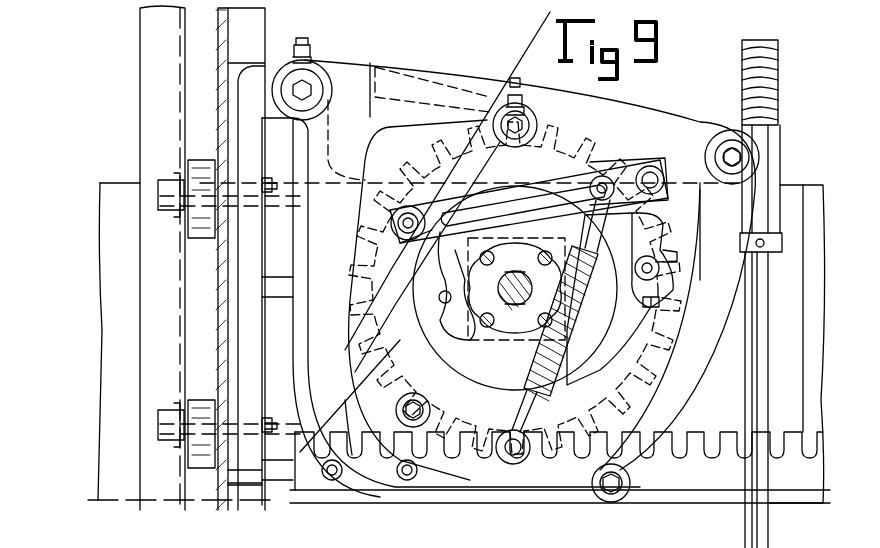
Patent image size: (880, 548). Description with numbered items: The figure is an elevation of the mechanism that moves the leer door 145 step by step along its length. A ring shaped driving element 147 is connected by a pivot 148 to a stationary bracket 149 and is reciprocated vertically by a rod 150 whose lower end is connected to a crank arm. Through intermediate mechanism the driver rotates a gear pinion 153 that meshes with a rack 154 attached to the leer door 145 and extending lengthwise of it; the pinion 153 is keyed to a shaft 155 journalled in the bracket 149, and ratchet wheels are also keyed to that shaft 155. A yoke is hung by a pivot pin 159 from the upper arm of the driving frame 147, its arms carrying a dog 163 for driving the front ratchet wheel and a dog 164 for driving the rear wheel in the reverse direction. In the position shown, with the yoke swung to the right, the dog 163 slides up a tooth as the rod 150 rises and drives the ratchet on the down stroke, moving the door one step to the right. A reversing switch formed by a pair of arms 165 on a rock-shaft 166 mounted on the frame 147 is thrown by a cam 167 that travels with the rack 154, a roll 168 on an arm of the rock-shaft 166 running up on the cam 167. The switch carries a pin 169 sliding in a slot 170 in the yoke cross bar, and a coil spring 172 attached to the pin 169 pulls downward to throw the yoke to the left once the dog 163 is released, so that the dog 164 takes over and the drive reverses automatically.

The leer door 145 is at (108, 492).
The ring shaped driving element 147 is at (455, 76).
The pivot 148 is at (308, 86).
The stationary bracket 149 is at (278, 60).
The rod 150 is at (768, 338).
The gear pinion 153 is at (640, 390).
The rack 154 is at (688, 480).
The shaft 155 is at (500, 362).
The pivot pin 159 is at (540, 118).
The dog 163 is at (432, 303).
The dog 164 is at (660, 268).
The arms 165 is at (563, 304).
The rock-shaft 166 is at (513, 464).
The cam 167 is at (345, 400).
The roll 168 is at (400, 402).
The pin 169 is at (622, 165).
The slot 170 is at (458, 212).
The coil spring 172 is at (588, 368).